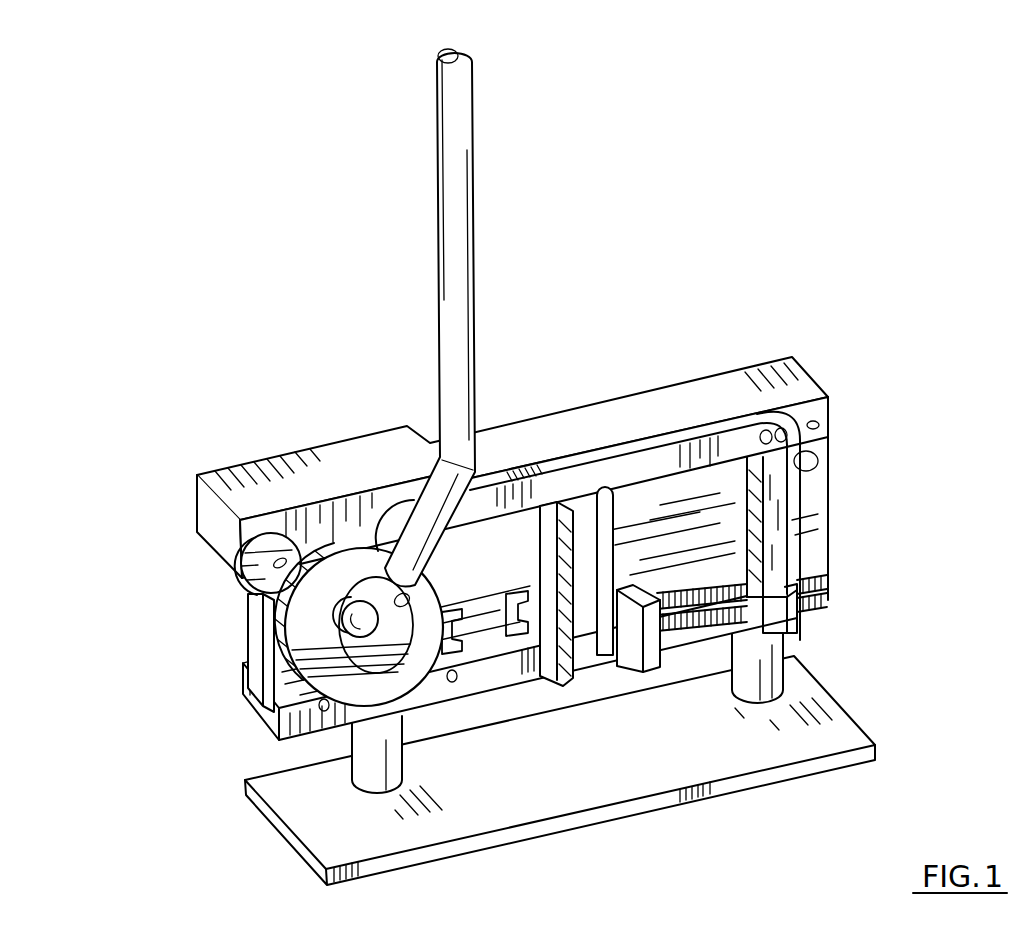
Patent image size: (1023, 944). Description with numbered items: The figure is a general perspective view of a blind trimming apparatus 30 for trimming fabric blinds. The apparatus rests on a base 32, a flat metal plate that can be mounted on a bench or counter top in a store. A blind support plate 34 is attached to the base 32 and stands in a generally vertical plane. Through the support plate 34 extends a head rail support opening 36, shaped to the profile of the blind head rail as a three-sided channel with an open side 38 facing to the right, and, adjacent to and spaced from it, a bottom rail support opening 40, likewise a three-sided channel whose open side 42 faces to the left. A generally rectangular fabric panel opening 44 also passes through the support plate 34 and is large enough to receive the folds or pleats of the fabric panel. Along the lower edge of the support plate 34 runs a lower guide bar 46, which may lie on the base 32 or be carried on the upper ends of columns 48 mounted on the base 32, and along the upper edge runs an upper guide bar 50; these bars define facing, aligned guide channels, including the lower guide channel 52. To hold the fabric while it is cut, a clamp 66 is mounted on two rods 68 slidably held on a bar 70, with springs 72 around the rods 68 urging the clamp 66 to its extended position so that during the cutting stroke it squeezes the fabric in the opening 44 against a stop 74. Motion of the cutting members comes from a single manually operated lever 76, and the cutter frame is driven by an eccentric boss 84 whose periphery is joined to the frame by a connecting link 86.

The trimming apparatus 30 is at (502, 421).
The base 32 is at (840, 700).
The blind support plate 34 is at (810, 485).
The head rail support opening 36 is at (457, 630).
The open side 38 is at (505, 613).
The bottom rail support opening 40 is at (540, 672).
The open side 42 is at (456, 642).
The fabric panel opening 44 is at (584, 540).
The lower guide bar 46 is at (273, 710).
The columns 48 is at (352, 748).
The upper guide bar 50 is at (810, 383).
The lower guide channel 52 is at (245, 680).
The clamp 66 is at (652, 668).
The rods 68 is at (800, 600).
The bar 70 is at (773, 516).
The springs 72 is at (700, 672).
The stop 74 is at (600, 657).
The lever 76 is at (455, 169).
The eccentric boss 84 is at (318, 603).
The connecting link 86 is at (667, 460).